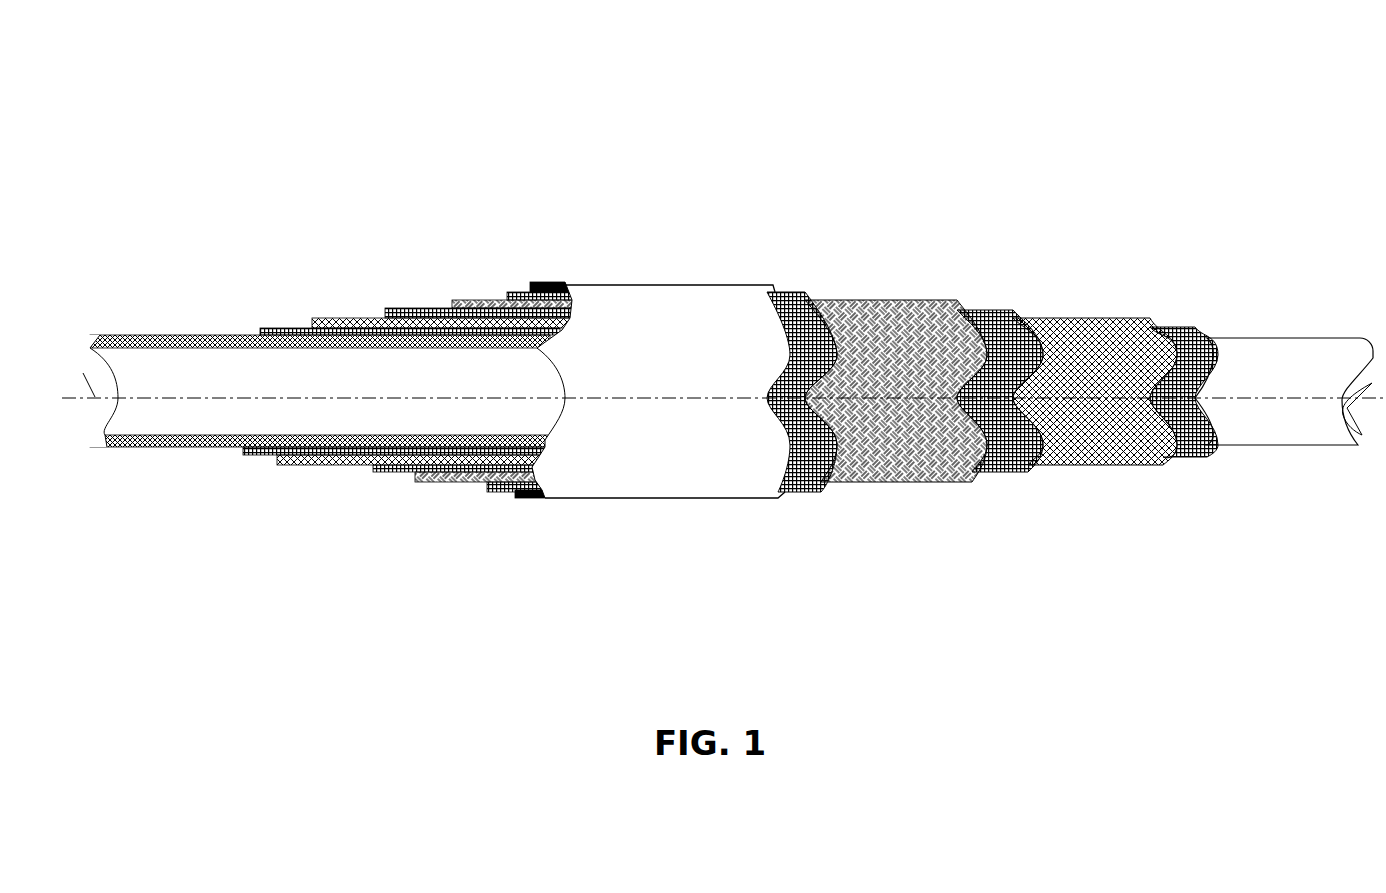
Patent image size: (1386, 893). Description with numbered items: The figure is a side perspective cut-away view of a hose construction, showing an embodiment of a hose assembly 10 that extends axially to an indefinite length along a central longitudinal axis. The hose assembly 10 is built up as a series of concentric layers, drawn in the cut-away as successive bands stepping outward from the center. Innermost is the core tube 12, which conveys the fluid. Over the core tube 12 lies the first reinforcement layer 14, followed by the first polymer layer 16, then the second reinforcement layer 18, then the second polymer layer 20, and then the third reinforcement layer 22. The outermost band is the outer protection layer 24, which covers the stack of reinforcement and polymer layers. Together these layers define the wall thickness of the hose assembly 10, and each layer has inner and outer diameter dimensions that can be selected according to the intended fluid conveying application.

The hose assembly 10 is at (1205, 84).
The core tube 12 is at (153, 334).
The first reinforcement layer 14 is at (280, 327).
The first polymer layer 16 is at (340, 317).
The second reinforcement layer 18 is at (417, 308).
The second polymer layer 20 is at (460, 300).
The third reinforcement layer 22 is at (517, 292).
The outer protection layer 24 is at (547, 283).